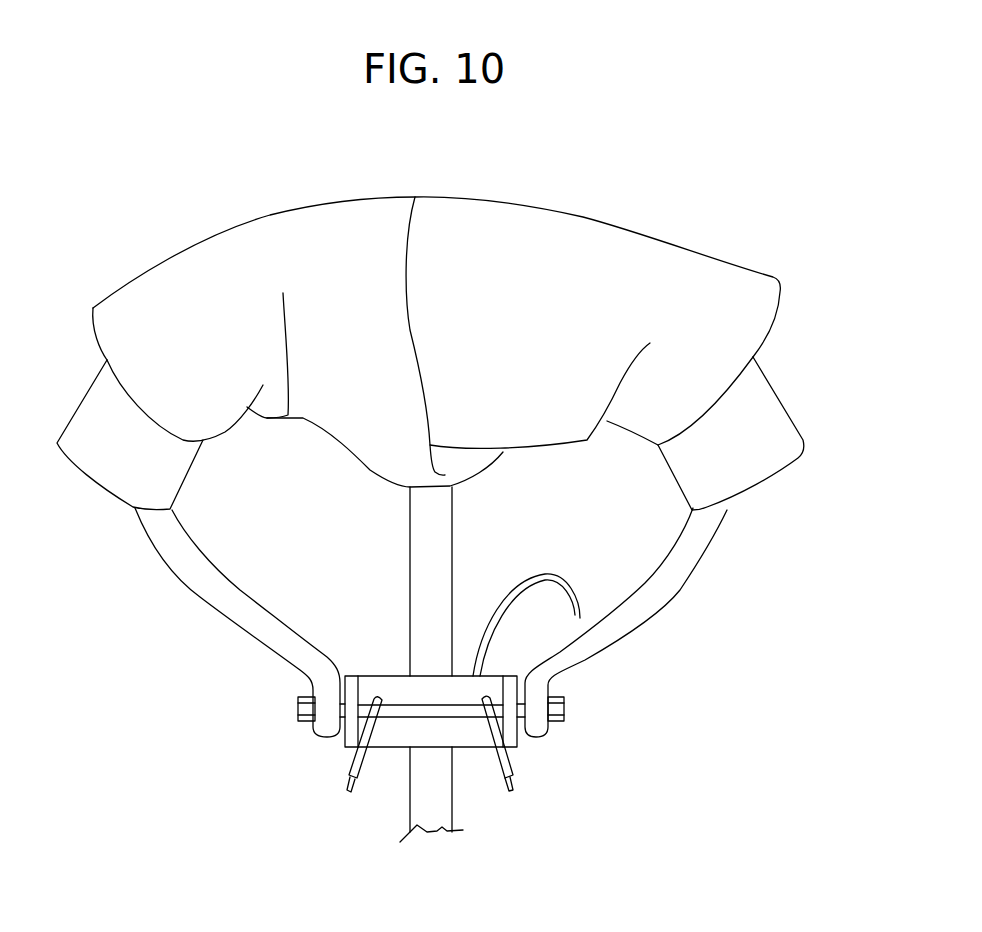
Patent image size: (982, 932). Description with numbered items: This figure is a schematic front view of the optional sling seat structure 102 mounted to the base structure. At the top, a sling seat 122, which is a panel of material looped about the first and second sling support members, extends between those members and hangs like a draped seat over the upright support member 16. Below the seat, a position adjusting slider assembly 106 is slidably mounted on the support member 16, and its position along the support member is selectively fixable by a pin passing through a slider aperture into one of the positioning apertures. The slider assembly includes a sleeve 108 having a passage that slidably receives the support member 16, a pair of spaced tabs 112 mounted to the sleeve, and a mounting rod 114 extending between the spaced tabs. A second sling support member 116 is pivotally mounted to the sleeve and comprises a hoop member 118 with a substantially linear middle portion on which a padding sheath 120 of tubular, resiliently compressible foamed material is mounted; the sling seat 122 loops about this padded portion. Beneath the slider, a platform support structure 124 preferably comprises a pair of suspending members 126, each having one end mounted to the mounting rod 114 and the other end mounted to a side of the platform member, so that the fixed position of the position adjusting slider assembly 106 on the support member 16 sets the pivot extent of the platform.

The sling seat structure 102 is at (470, 298).
The sling seat 122 is at (583, 243).
The padding sheath 120 is at (750, 407).
The support member 16 is at (435, 548).
The hoop member 118 is at (465, 622).
The second sling support member 116 is at (592, 632).
The position adjusting slider assembly 106 is at (397, 683).
The sleeve 108 is at (442, 738).
The mounting rod 114 is at (402, 712).
The spaced tabs 112 is at (345, 743).
The suspending members 126 is at (348, 790).
The platform support structure 124 is at (557, 770).